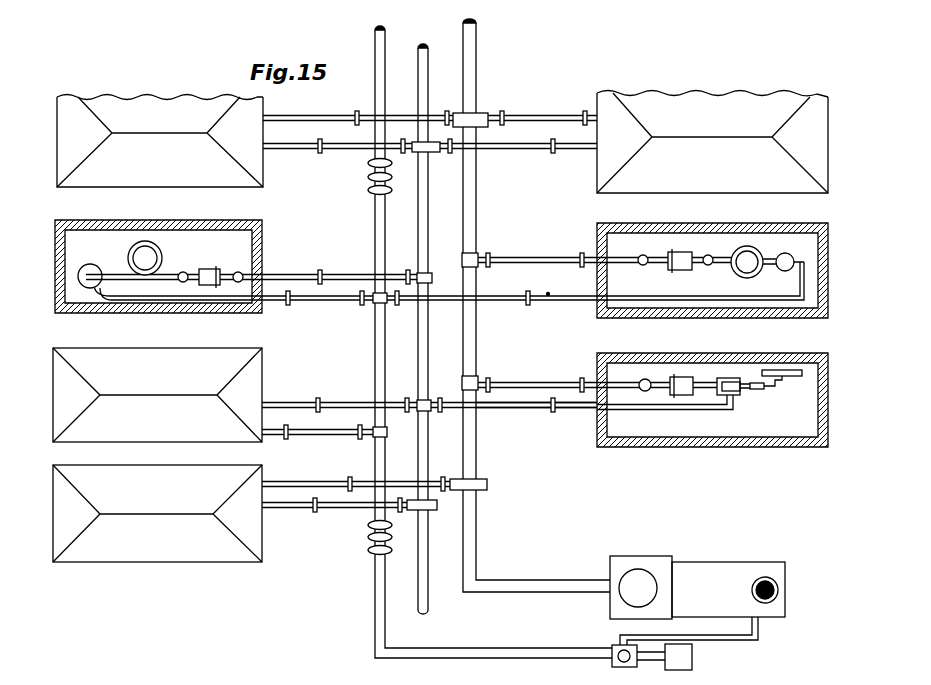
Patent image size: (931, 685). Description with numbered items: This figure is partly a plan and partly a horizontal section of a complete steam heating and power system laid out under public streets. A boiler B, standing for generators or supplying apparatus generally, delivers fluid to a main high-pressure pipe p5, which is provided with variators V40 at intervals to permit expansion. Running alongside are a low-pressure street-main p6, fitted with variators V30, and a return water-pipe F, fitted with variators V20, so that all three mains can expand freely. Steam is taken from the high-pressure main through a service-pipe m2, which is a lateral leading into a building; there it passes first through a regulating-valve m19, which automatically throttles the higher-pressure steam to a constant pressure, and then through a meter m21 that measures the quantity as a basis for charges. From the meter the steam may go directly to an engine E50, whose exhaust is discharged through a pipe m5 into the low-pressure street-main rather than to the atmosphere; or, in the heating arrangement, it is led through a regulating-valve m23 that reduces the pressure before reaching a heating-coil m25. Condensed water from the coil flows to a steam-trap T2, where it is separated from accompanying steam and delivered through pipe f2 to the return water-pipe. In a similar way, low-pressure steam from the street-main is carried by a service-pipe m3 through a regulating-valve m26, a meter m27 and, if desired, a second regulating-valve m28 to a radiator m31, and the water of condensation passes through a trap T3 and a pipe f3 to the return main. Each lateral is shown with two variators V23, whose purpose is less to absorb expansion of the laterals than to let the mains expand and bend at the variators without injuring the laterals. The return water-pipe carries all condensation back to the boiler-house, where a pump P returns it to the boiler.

The variator V23 is at (438, 306).
The variator V40 is at (483, 113).
The variator V30 is at (433, 152).
The variator V20 is at (392, 357).
The steam-trap T3 is at (90, 269).
The radiator m31 is at (145, 252).
The second regulating-valve m28 is at (183, 283).
The meter m27 is at (211, 270).
The regulating-valve m26 is at (239, 283).
The service-pipe m3 is at (253, 271).
The pipe f3 is at (345, 299).
The pipe f2 is at (676, 281).
The service-pipe m2 is at (626, 315).
The pipe m5 is at (506, 408).
The regulating-valve m19 is at (643, 323).
The meter m21 is at (679, 318).
The regulating-valve m23 is at (710, 266).
The heating-coil m25 is at (747, 258).
The steam-trap T2 is at (785, 254).
The engine E50 is at (759, 390).
The main high-pressure pipe p5 is at (455, 548).
The low-pressure street-main p6 is at (409, 568).
The return water-pipe F is at (480, 342).
The boiler B is at (697, 587).
The pump P is at (685, 651).